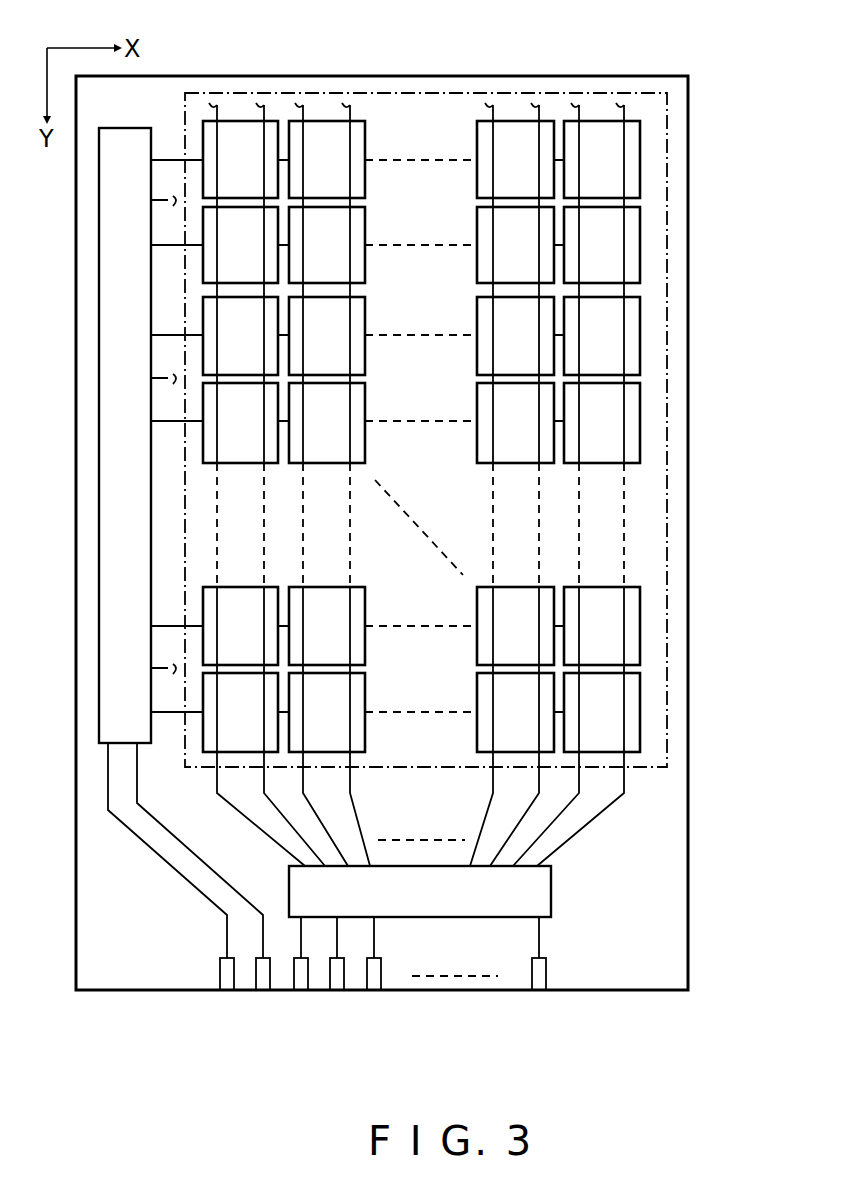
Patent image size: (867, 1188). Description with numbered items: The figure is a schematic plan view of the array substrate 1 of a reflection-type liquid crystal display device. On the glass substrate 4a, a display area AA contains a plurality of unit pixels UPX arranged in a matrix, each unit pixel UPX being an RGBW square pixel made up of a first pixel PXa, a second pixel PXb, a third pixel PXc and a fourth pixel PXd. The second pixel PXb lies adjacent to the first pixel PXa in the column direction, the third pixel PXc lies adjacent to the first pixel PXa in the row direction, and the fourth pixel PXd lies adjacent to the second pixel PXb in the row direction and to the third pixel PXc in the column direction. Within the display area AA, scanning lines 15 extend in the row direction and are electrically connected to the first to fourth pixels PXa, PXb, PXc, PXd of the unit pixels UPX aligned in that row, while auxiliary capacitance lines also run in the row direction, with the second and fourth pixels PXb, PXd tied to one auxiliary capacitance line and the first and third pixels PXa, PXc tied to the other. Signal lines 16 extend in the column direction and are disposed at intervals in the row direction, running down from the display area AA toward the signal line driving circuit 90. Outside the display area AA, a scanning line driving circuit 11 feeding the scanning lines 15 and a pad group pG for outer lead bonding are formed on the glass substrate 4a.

The array substrate 1 is at (665, 76).
The glass substrate 4a is at (682, 92).
The scanning line driving circuit 11 is at (99, 533).
The scanning lines 15 is at (168, 200).
The signal lines 16 is at (264, 107).
The signal line driving circuit 90 is at (552, 893).
The first pixel PXa is at (554, 238).
The second pixel PXb is at (554, 147).
The third pixel PXc is at (660, 335).
The fourth pixel PXd is at (640, 178).
The unit pixel UPX is at (516, 436).
The display area AA is at (402, 99).
The pad group pG is at (375, 996).